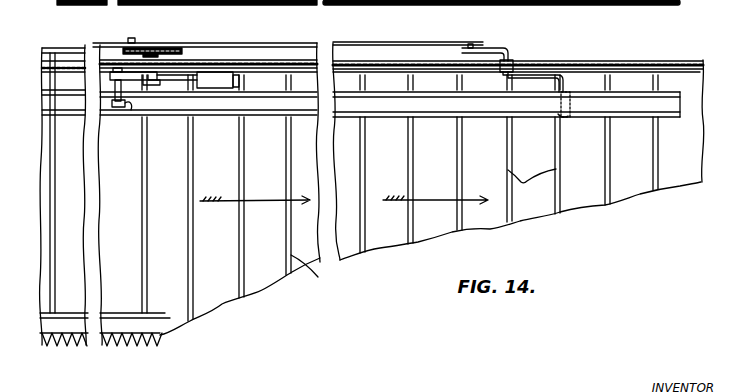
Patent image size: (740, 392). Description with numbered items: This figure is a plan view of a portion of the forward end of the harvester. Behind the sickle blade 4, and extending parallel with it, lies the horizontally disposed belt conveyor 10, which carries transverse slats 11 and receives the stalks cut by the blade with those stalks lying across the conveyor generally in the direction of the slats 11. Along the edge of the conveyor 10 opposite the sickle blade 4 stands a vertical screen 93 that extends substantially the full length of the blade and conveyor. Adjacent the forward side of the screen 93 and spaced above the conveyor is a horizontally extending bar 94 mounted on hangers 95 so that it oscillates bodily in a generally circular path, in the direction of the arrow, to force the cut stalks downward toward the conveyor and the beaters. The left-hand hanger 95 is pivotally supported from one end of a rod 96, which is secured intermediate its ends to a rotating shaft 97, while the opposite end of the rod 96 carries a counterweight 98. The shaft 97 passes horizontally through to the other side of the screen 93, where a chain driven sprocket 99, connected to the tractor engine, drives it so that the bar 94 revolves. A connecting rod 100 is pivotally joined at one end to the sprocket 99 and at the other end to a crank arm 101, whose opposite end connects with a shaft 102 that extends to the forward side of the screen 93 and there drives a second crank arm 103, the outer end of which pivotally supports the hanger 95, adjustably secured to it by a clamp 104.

The sickle blade 4 is at (122, 350).
The belt conveyor 10 is at (624, 196).
The transverse slats 11 is at (423, 230).
The vertical screen 93 is at (423, 62).
The horizontally extending bar 94 is at (222, 110).
The hanger 95 is at (549, 117).
The rod 96 is at (184, 86).
The rotating shaft 97 is at (153, 81).
The counterweight 98 is at (218, 74).
The chain driven sprocket 99 is at (172, 47).
The connecting rod 100 is at (298, 42).
The crank arm 101 is at (492, 46).
The shaft 102 is at (515, 52).
The second crank arm 103 is at (537, 78).
The clamp 104 is at (572, 106).